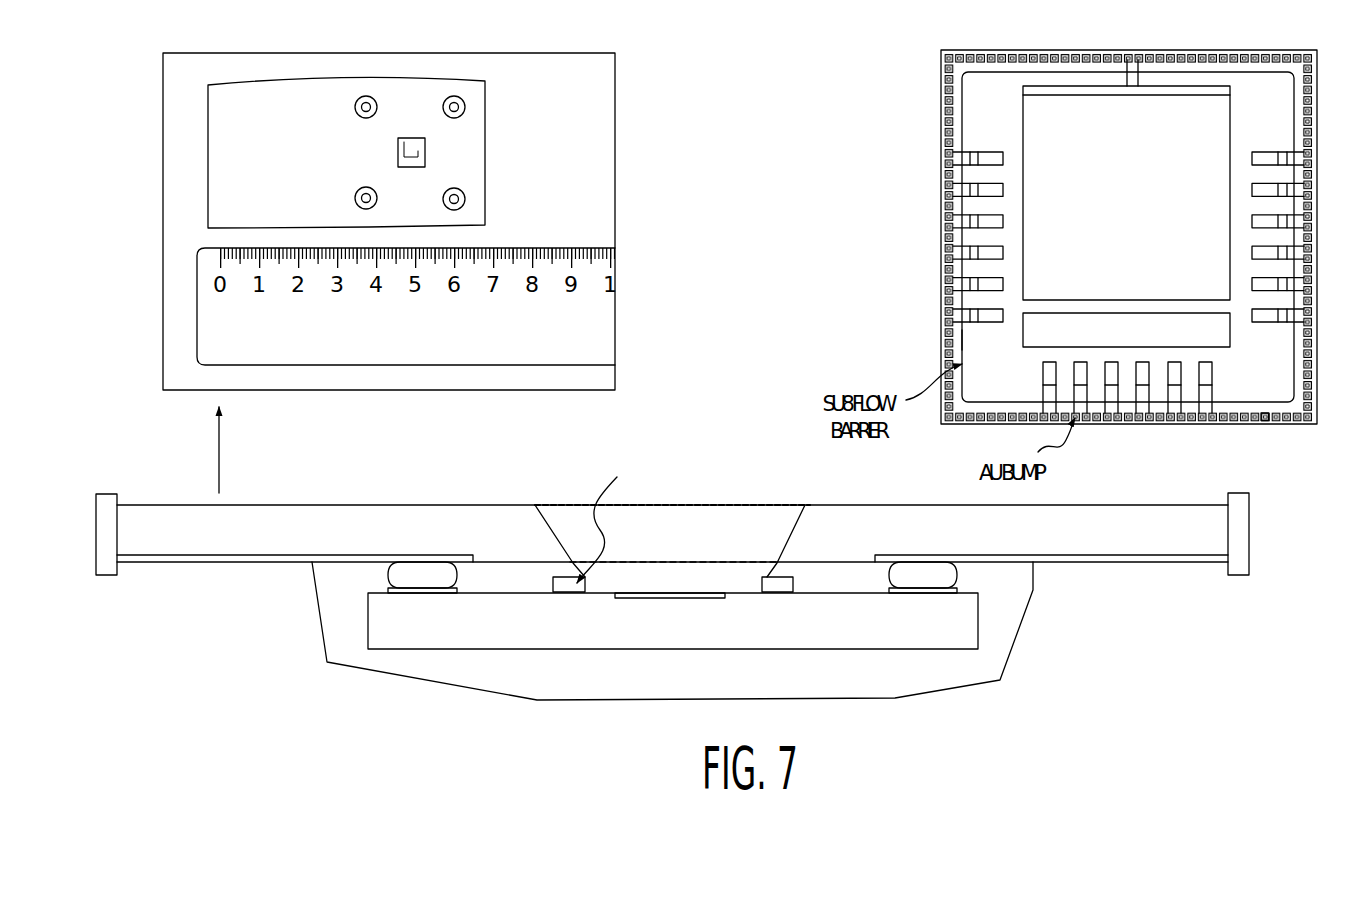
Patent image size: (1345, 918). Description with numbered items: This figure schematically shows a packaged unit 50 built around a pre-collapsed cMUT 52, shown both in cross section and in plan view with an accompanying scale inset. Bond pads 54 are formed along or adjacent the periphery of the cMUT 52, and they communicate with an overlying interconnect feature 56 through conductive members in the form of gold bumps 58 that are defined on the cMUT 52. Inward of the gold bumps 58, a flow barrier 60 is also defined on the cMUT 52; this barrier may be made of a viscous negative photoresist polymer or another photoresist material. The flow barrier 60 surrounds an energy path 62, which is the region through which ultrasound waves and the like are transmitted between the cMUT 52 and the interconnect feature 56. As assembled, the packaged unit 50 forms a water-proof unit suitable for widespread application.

The packaged unit 50 is at (1058, 663).
The pre-collapsed cMUT 52 is at (507, 640).
The bond pads 54 is at (370, 594).
The interconnect feature 56 is at (108, 568).
The gold bumps 58 is at (390, 574).
The flow barrier 60 is at (562, 570).
The energy path 62 is at (733, 520).